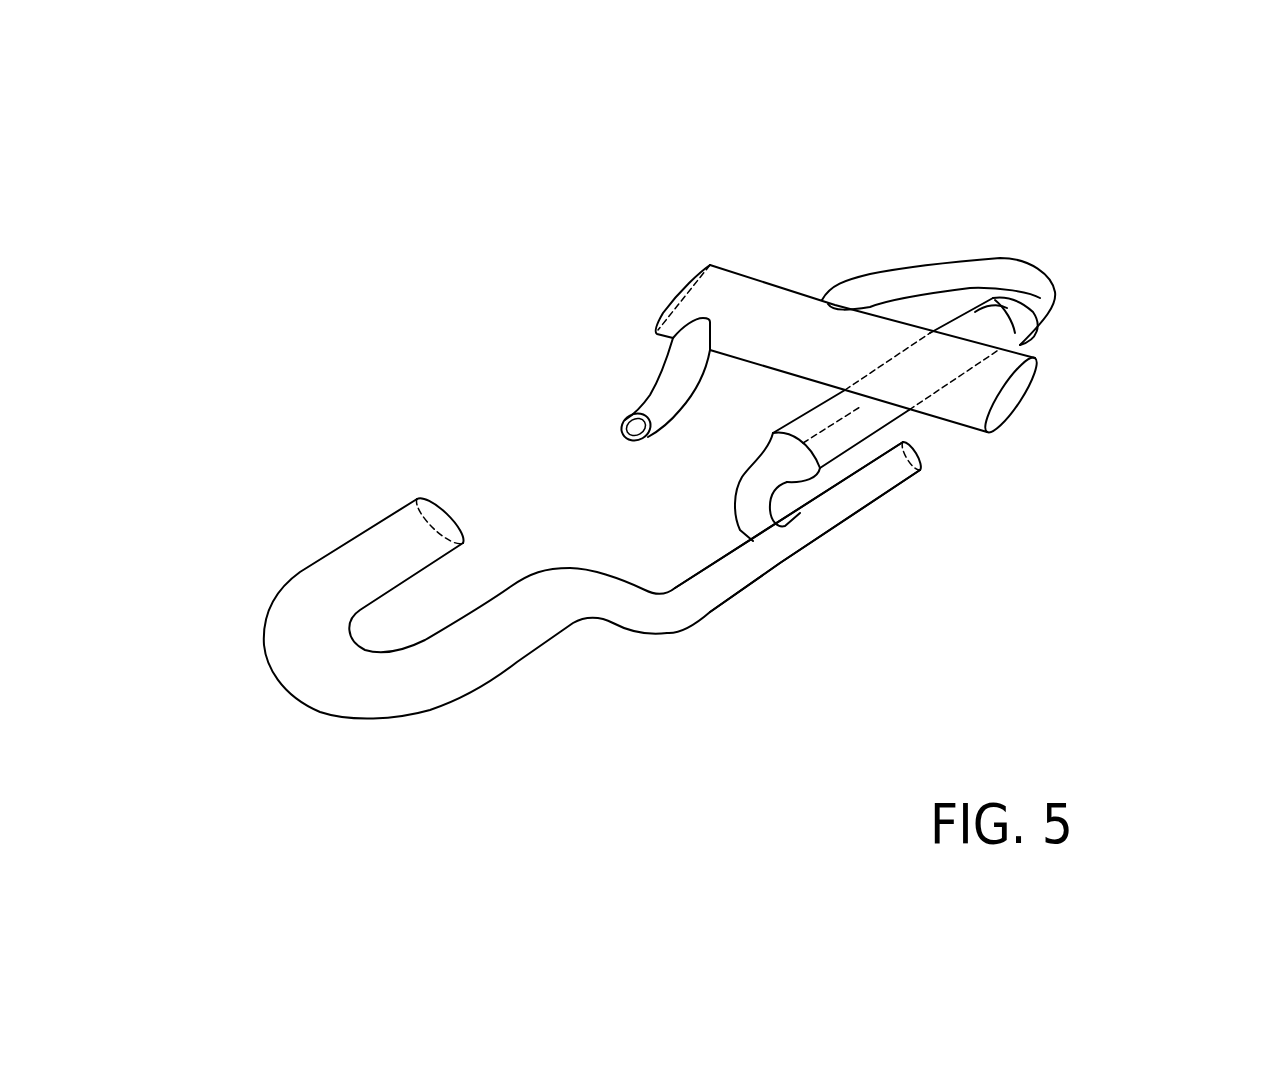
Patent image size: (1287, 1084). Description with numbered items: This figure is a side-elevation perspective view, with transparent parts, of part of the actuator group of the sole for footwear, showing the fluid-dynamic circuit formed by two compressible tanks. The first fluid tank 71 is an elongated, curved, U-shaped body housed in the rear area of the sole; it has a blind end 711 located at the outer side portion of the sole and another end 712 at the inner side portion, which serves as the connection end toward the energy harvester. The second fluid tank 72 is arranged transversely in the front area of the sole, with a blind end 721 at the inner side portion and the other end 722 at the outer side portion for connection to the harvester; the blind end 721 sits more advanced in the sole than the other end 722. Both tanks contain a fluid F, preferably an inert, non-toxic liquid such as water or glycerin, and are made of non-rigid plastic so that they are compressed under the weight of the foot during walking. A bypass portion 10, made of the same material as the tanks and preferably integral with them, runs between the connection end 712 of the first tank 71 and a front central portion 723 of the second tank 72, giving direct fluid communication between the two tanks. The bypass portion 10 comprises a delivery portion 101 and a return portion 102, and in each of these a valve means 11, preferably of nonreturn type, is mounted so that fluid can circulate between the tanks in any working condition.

The bypass portion 10 is at (1105, 316).
The valve means 11 is at (1015, 333).
The delivery portion 101 is at (1030, 343).
The return portion 102 is at (970, 325).
The first fluid tank 71 is at (290, 635).
The blind end 711 is at (430, 510).
The other end 712 is at (863, 495).
The second fluid tank 72 is at (780, 303).
The blind end 721 is at (1013, 403).
The other end 722 is at (660, 405).
The front central portion 723 is at (822, 300).
The fluid F is at (710, 307).